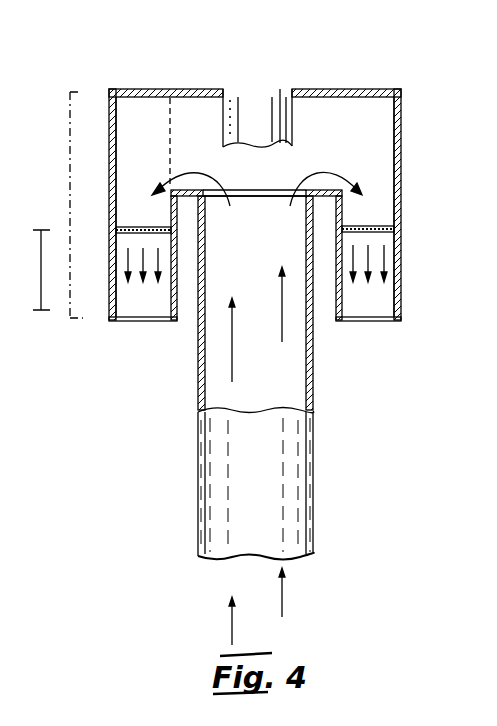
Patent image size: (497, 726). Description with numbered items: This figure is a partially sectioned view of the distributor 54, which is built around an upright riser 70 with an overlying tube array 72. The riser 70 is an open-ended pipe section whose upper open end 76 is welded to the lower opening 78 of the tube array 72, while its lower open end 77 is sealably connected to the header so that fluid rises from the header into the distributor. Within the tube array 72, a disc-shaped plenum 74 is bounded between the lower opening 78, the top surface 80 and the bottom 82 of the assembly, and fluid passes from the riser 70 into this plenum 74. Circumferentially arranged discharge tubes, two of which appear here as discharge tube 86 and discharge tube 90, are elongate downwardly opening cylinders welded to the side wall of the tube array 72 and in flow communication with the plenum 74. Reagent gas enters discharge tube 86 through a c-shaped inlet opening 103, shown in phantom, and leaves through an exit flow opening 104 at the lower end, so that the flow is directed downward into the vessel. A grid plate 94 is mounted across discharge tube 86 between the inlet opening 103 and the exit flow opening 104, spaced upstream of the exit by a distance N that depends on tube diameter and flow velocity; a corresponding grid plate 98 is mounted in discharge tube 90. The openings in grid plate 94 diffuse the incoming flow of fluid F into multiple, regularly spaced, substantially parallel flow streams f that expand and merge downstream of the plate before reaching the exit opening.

The distributor 54 is at (255, 171).
The top surface 80 is at (188, 89).
The plenum 74 is at (258, 141).
The c-shaped inlet opening 103 is at (168, 122).
The lower opening 78 is at (288, 177).
The upper open end 76 is at (290, 218).
The bottom 82 is at (182, 198).
The grid plate 94 is at (130, 228).
The grid plate 98 is at (372, 224).
The discharge tube 86 is at (124, 239).
The exit flow opening 104 is at (137, 322).
The discharge tube 90 is at (401, 270).
The riser 70 is at (284, 394).
The lower open end 77 is at (313, 555).
The tube array 72 is at (70, 195).
The flow of fluid F is at (190, 170).
The parallel flow streams f is at (158, 259).
The distance N is at (35, 270).